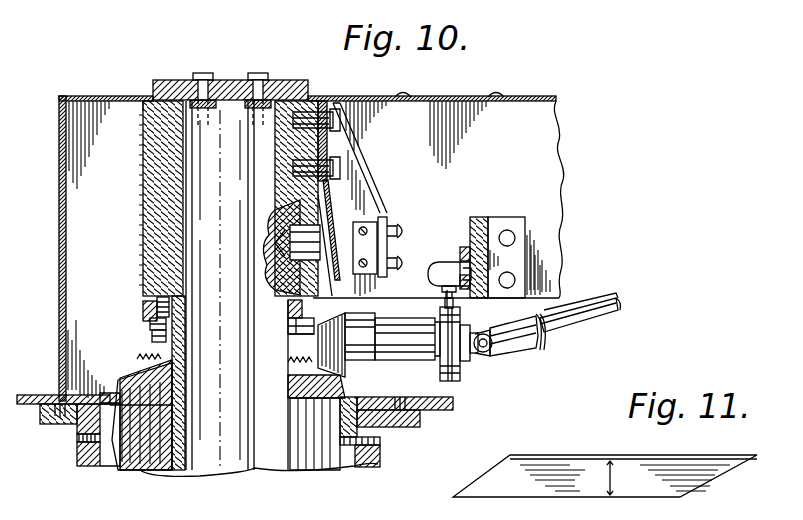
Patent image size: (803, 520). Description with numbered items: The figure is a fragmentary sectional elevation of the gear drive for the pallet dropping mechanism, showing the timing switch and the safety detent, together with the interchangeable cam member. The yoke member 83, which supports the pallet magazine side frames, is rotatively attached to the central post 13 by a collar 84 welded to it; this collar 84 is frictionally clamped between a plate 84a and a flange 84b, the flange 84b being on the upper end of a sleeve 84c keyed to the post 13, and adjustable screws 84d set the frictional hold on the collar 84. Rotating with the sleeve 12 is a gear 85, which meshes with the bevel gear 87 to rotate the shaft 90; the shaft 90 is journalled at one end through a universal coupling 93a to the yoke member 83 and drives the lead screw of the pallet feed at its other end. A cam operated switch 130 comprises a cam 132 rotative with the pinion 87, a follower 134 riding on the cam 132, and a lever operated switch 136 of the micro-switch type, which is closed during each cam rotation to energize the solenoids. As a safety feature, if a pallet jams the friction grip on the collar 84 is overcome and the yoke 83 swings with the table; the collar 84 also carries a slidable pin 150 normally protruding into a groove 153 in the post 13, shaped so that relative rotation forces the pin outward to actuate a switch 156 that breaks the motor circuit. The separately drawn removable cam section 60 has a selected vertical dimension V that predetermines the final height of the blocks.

In FIG. 10, the sleeve 12 is at (78, 459).
In FIG. 10, the post 13 is at (259, 288).
In FIG. 11, the removable section (shim) 60 is at (744, 461).
In FIG. 10, the yoke member 83 is at (146, 96).
In FIG. 10, the collar 84 is at (152, 204).
In FIG. 10, the plate 84a is at (175, 80).
In FIG. 10, the flange 84b is at (145, 306).
In FIG. 10, the sleeve 84c is at (182, 440).
In FIG. 10, the adjustable screws 84d is at (152, 337).
In FIG. 10, the gear 85 is at (345, 369).
In FIG. 10, the bevel gear (pinion) 87 is at (332, 315).
In FIG. 10, the shaft 90 is at (592, 316).
In FIG. 10, the universal coupling 93a is at (539, 334).
In FIG. 10, the cam operated switch 130 is at (521, 185).
In FIG. 10, the cam 132 is at (458, 378).
In FIG. 10, the follower 134 is at (455, 305).
In FIG. 10, the lever operated switch (micro-switch) 136 is at (440, 268).
In FIG. 10, the slidable pin 150 is at (350, 201).
In FIG. 10, the groove 153 is at (272, 236).
In FIG. 10, the switch 156 is at (370, 230).